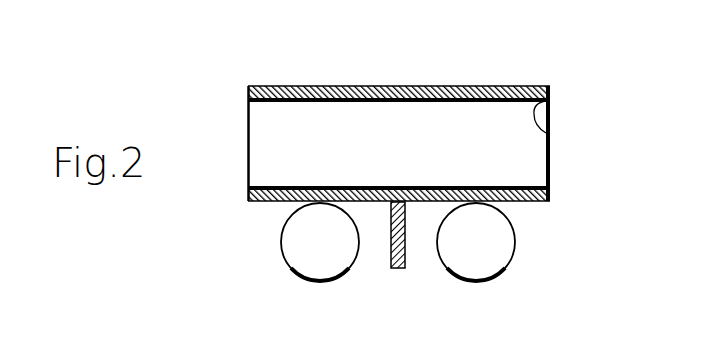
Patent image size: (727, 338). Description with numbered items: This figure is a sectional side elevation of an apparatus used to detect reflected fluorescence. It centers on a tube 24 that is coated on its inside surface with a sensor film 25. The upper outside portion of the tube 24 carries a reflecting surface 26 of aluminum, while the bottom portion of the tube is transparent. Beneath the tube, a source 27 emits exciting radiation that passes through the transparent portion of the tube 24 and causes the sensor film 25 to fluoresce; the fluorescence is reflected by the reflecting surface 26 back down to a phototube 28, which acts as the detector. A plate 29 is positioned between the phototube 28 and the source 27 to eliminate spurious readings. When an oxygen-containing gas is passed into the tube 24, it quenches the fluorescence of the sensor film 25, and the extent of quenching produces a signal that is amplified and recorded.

The tube 24 is at (424, 125).
The sensor film 25 is at (547, 133).
The reflecting surface 26 is at (362, 86).
The source 27 is at (301, 282).
The phototube 28 is at (515, 240).
The plate 29 is at (397, 268).